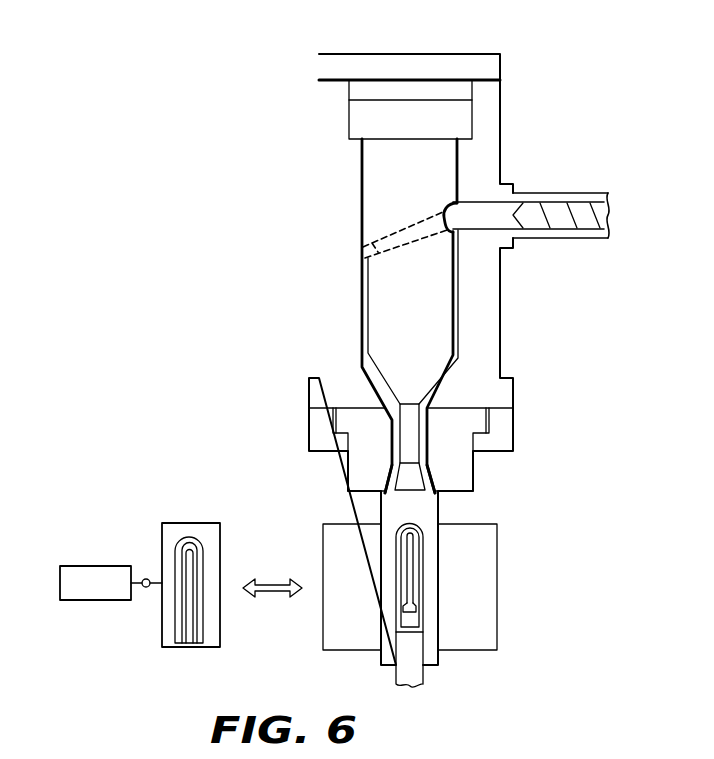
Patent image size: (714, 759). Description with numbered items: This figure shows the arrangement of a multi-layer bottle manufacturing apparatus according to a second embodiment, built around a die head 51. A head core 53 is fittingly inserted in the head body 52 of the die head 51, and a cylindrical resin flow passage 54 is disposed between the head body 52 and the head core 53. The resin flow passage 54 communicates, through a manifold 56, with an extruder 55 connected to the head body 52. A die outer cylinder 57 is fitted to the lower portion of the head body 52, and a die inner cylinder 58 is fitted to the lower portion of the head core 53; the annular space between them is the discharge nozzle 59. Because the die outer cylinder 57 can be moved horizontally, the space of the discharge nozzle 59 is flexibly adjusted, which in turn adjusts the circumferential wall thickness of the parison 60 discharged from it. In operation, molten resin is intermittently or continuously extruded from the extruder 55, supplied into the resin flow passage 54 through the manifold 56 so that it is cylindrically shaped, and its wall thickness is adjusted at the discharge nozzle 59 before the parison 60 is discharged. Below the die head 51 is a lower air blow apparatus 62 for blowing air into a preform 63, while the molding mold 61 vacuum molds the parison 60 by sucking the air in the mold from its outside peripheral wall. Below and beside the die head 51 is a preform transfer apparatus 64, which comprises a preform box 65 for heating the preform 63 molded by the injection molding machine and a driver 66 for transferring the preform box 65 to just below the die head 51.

The die head 51 is at (541, 60).
The head body 52 is at (502, 123).
The head core 53 is at (428, 318).
The resin flow passage 54 is at (453, 360).
The extruder 55 is at (586, 193).
The manifold 56 is at (397, 235).
The die outer cylinder 57 is at (475, 473).
The die inner cylinder 58 is at (412, 488).
The discharge nozzle 59 is at (390, 487).
The parison 60 is at (438, 572).
The molding mold 61 is at (517, 598).
The lower air blow apparatus 62 is at (441, 677).
The preform 63 is at (198, 617).
The preform transfer apparatus 64 is at (147, 511).
The preform box 65 is at (167, 628).
The driver 66 is at (67, 593).